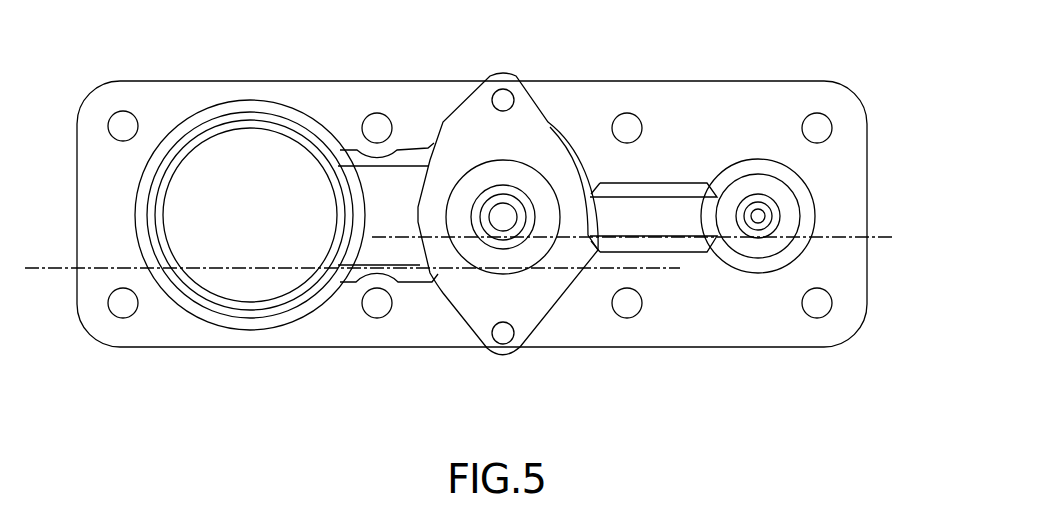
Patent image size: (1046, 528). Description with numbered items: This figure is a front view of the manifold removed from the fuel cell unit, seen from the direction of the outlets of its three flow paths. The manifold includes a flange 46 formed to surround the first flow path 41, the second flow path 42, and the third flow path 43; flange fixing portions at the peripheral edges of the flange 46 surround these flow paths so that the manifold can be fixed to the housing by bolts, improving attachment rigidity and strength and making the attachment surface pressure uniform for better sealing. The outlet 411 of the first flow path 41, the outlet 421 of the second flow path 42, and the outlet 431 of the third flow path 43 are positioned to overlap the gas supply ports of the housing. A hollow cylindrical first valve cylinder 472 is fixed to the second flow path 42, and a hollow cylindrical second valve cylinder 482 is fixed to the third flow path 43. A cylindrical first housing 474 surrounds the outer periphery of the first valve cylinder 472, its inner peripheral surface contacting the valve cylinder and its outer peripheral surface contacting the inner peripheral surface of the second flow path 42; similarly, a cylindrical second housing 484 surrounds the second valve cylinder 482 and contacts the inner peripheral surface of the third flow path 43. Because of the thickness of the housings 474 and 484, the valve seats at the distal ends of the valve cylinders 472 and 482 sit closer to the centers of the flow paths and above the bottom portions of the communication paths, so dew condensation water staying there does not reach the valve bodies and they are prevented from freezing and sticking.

The first flow path 41 is at (265, 157).
The outlet of the first flow path 411 is at (238, 292).
The second flow path 42 is at (517, 183).
The outlet of the second flow path 421 is at (503, 220).
The third flow path 43 is at (763, 190).
The outlet of the third flow path 431 is at (757, 222).
The flange 46 is at (703, 112).
The first valve cylinder 472 is at (523, 235).
The first housing 474 is at (467, 248).
The second valve cylinder 482 is at (770, 232).
The second housing 484 is at (780, 197).